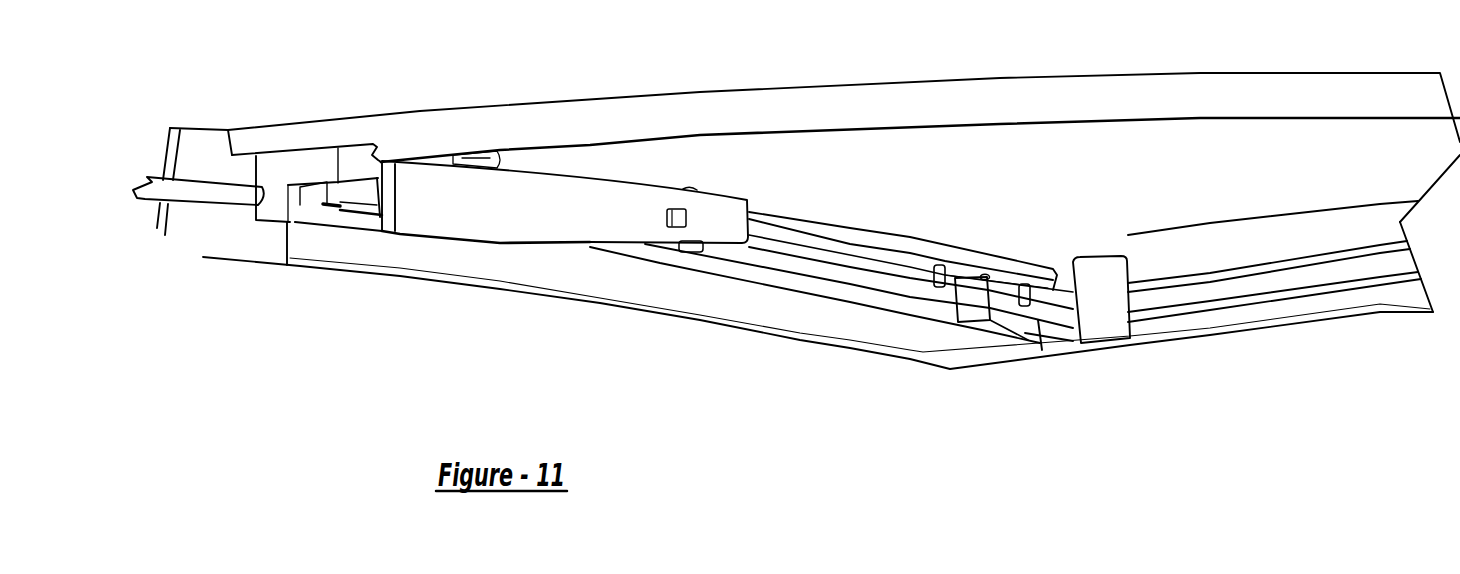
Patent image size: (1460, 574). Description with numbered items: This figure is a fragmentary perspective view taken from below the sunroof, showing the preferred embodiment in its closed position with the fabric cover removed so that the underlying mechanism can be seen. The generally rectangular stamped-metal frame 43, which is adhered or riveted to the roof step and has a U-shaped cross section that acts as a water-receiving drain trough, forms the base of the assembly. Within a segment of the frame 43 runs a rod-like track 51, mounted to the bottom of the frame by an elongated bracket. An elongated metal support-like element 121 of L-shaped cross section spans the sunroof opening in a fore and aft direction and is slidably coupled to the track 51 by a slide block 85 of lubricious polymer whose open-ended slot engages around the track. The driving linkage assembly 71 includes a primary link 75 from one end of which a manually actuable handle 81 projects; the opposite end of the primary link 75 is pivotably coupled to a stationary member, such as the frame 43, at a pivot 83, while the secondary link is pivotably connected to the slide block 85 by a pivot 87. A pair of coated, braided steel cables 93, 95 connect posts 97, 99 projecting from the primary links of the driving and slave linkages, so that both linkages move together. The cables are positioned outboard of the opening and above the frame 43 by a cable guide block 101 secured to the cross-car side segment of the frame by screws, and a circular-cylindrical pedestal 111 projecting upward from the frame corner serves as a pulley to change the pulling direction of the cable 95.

The support-like element 121 is at (797, 99).
The rod-like track 51 is at (207, 192).
The slide block 85 is at (272, 208).
The pivot 87 is at (322, 210).
The manually actuable handle 81 is at (537, 228).
The primary link 75 is at (813, 226).
The driving linkage assembly 71 is at (863, 209).
The cable 93 is at (1275, 270).
The cable 95 is at (1367, 287).
The frame 43 is at (1275, 323).
The post 97 is at (936, 268).
The pivot 83 is at (985, 276).
The post 99 is at (1027, 284).
The cable guide block 101 is at (1107, 323).
The pedestal 111 is at (970, 310).